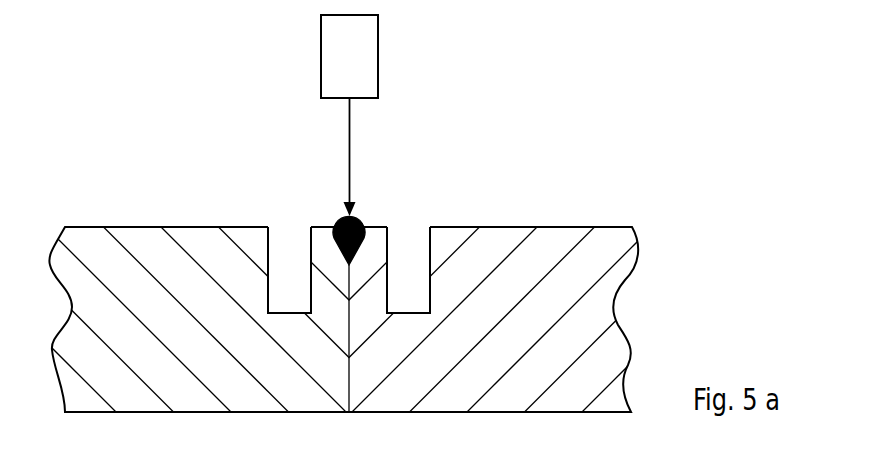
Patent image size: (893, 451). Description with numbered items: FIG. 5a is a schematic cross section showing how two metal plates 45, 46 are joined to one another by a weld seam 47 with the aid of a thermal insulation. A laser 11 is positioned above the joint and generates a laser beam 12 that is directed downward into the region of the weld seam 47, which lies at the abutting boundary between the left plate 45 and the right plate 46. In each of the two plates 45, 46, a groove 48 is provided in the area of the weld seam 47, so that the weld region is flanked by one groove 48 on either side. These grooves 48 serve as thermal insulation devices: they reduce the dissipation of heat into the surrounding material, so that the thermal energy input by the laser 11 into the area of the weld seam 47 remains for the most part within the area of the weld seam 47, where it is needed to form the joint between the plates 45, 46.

The laser 11 is at (363, 70).
The laser beam 12 is at (352, 162).
The plate 45 is at (142, 237).
The plate 46 is at (552, 235).
The weld seam 47 is at (338, 217).
The groove 48 is at (283, 305).